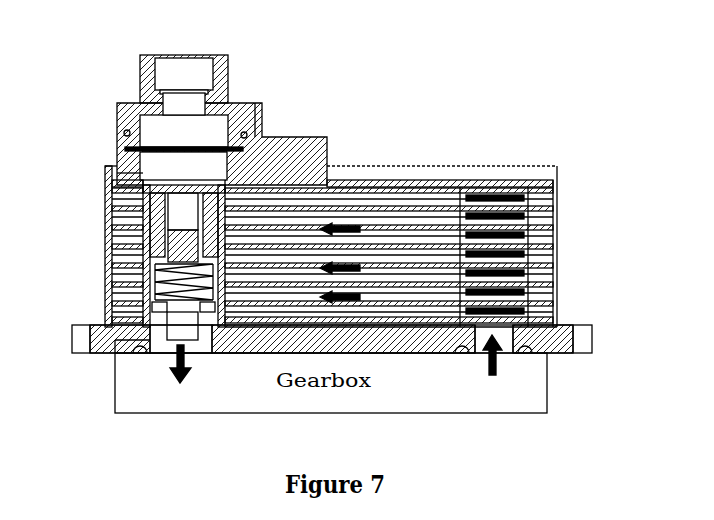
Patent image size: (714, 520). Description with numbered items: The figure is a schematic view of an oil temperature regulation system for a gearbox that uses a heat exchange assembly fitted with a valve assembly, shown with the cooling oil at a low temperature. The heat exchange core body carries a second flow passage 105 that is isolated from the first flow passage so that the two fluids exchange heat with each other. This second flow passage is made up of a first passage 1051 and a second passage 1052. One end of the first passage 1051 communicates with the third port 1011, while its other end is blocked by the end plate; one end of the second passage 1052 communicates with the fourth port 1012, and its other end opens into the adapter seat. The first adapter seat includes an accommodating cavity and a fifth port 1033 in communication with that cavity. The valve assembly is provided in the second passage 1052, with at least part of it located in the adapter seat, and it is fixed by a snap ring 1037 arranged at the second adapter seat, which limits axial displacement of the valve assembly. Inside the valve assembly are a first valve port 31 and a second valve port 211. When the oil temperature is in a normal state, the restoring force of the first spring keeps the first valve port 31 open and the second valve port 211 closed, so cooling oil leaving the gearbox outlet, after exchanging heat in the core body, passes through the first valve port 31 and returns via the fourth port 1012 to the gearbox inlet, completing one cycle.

The fifth port 1033 is at (183, 54).
The snap ring 1037 is at (240, 151).
The second valve port 211 is at (227, 252).
The first valve port 31 is at (335, 203).
The plate stack 105 is at (557, 242).
The first passage 1051 is at (490, 250).
The second passage 1052 is at (128, 230).
The fourth port 1012 is at (163, 347).
The third port 1011 is at (503, 340).